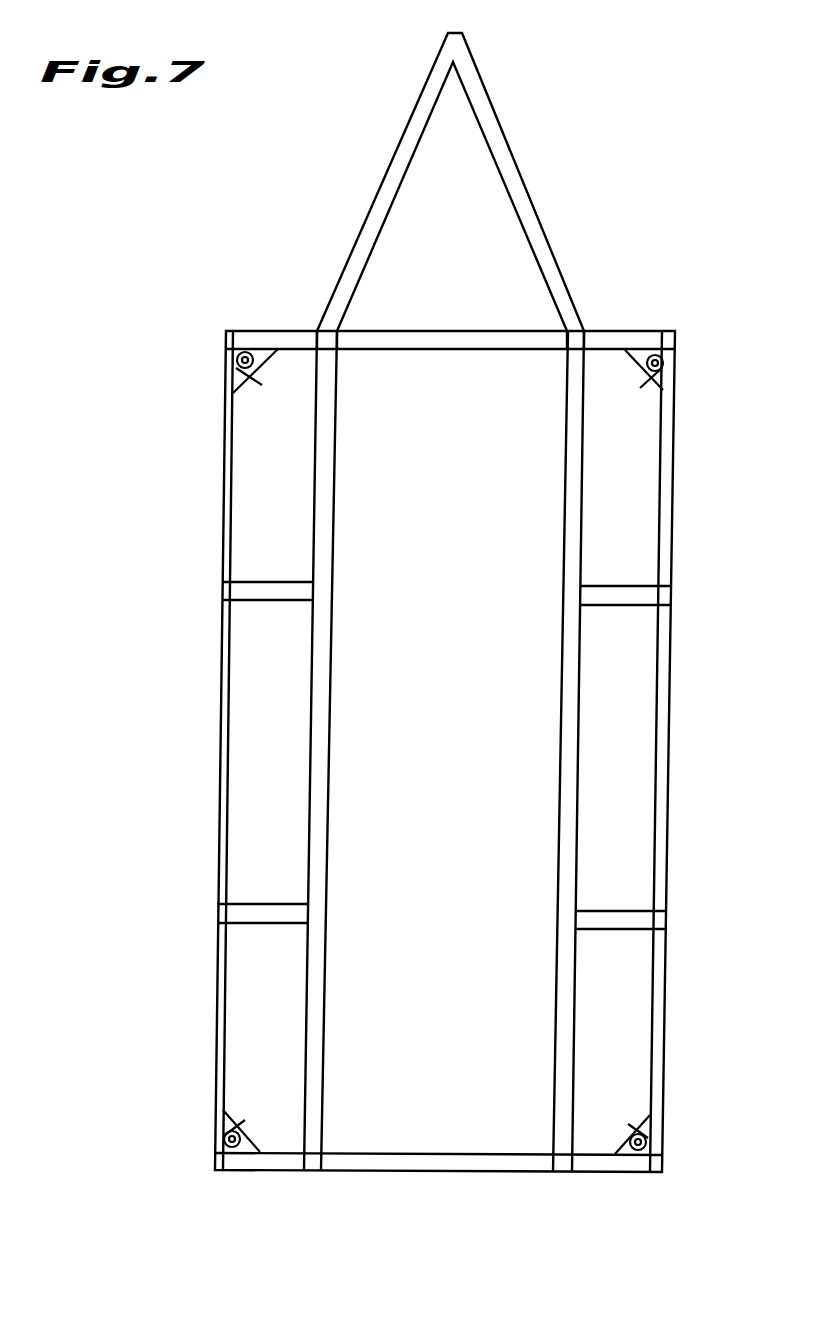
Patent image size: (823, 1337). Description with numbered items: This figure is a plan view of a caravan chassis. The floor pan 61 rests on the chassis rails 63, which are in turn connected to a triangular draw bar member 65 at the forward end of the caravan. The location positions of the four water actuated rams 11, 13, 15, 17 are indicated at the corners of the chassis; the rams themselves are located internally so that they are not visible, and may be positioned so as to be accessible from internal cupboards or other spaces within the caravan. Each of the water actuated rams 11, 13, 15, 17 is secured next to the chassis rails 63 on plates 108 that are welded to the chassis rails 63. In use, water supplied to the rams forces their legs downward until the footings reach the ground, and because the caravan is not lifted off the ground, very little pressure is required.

The water actuated ram 11 is at (253, 370).
The water actuated ram 13 is at (642, 368).
The water actuated ram 15 is at (243, 1130).
The water actuated ram 17 is at (630, 1138).
The floor pan 61 is at (455, 608).
The chassis rails 63 is at (437, 350).
The triangular draw bar member 65 is at (382, 177).
The plates 108 is at (266, 348).